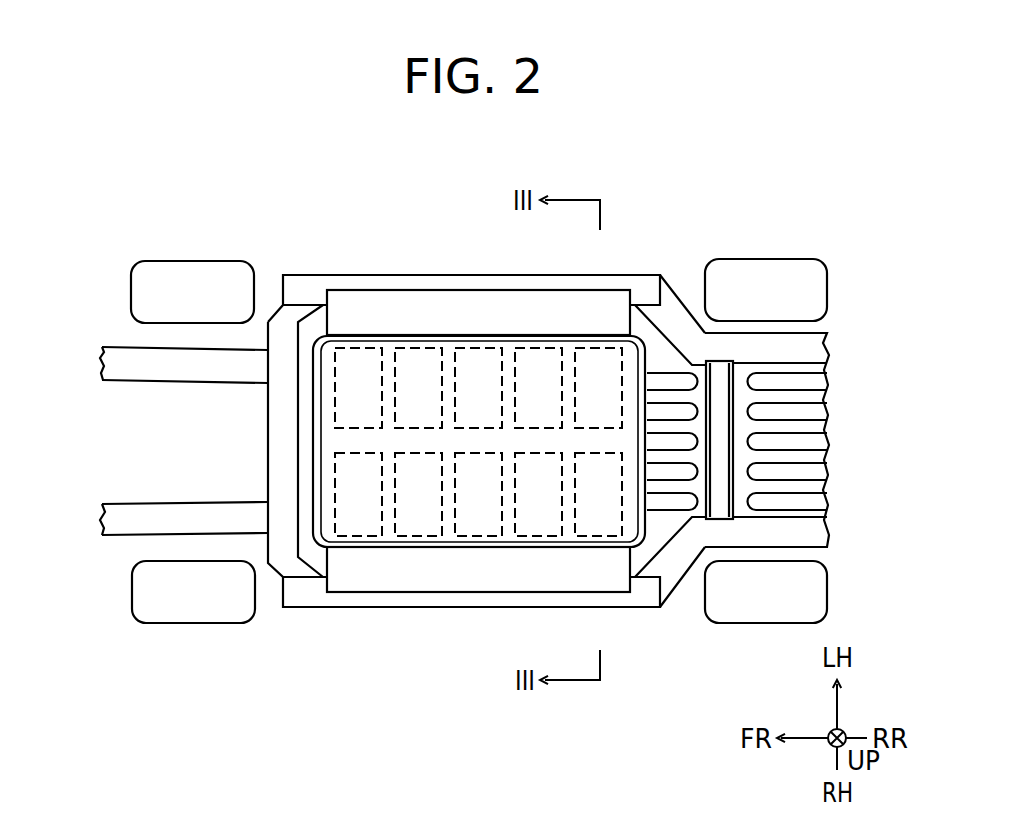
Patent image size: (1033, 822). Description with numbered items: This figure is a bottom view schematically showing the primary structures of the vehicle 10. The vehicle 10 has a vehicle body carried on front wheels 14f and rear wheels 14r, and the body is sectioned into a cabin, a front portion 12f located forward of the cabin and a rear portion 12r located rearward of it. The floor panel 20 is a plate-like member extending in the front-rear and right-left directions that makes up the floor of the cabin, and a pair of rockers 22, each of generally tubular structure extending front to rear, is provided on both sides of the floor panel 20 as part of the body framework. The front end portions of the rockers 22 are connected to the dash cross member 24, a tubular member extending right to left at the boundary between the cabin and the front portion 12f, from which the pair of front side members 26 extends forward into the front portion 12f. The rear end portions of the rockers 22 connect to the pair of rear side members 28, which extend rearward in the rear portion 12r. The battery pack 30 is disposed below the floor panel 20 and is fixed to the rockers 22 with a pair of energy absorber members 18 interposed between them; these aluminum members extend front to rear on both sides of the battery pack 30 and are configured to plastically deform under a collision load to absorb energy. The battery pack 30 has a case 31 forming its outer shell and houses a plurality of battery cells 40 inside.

The vehicle 10 is at (818, 152).
The front portion 12f is at (102, 330).
The rear portion 12r is at (848, 338).
The front wheels 14f is at (158, 270).
The rear wheels 14r is at (813, 268).
The energy absorber (EA) members 18 is at (397, 308).
The floor panel 20 is at (662, 355).
The rockers 22 is at (303, 287).
The dash cross member 24 is at (277, 328).
The front side members 26 is at (113, 522).
The rear side members 28 is at (815, 527).
The battery pack 30 is at (327, 405).
The case 31 is at (313, 448).
The battery cells 40 is at (482, 345).